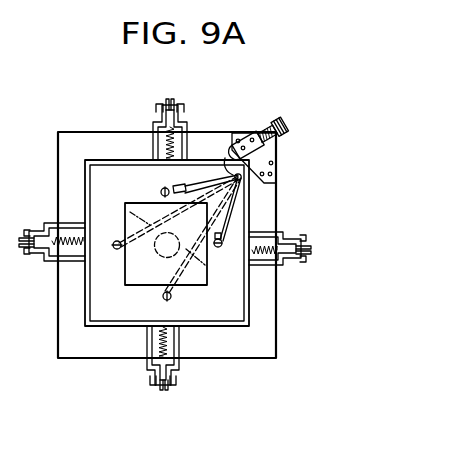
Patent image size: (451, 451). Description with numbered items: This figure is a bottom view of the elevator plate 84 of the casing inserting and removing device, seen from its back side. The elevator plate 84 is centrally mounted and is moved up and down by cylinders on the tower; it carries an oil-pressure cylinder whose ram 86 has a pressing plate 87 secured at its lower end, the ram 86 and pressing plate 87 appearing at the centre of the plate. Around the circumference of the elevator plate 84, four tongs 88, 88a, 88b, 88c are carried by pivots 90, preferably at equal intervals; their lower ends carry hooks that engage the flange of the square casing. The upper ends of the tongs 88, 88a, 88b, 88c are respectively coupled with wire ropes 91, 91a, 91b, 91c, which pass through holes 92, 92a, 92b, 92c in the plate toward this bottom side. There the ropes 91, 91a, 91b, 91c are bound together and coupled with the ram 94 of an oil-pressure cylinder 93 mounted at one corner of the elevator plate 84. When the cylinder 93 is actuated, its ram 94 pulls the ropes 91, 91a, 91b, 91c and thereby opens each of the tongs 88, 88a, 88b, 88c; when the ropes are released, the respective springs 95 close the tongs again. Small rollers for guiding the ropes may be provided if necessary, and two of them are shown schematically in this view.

The elevator plate 84 is at (102, 130).
The ram 86 is at (157, 250).
The pressing plate 87 is at (137, 288).
The tong 88 is at (302, 246).
The tong 88a is at (172, 98).
The tong 88b is at (28, 257).
The tong 88c is at (163, 392).
The pivot 90 is at (185, 108).
The wire rope 91 is at (236, 198).
The wire rope 91a is at (204, 182).
The wire rope 91b is at (123, 213).
The wire rope 91c is at (207, 270).
The hole 92 is at (219, 248).
The hole 92a is at (161, 193).
The hole 92b is at (117, 250).
The hole 92c is at (171, 298).
The oil-pressure cylinder 93 is at (273, 120).
The ram 94 is at (242, 135).
The spring 95 is at (167, 145).